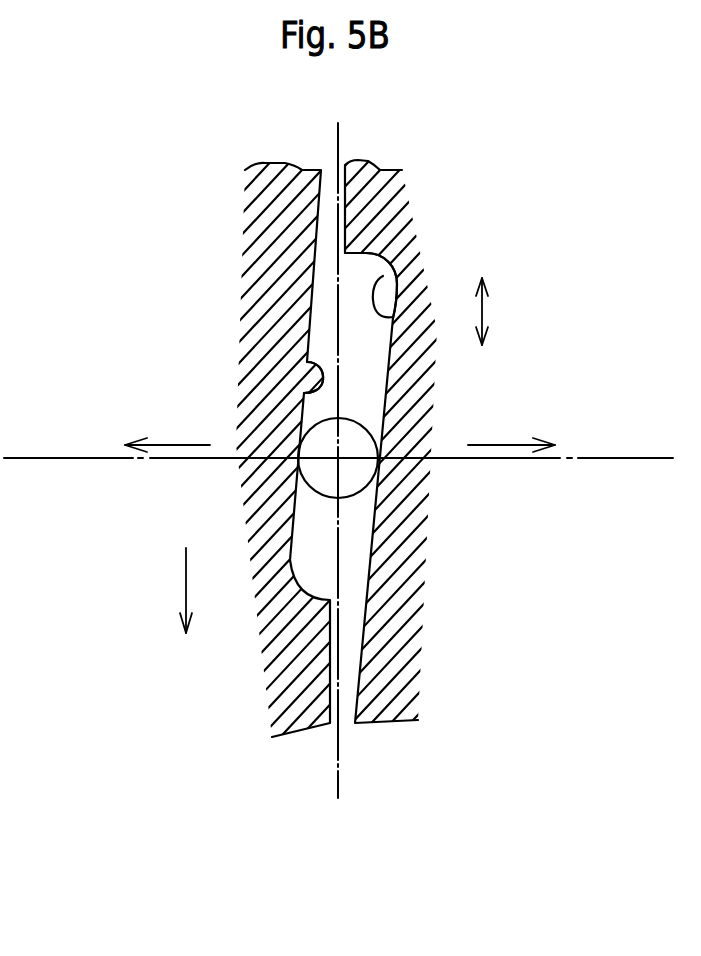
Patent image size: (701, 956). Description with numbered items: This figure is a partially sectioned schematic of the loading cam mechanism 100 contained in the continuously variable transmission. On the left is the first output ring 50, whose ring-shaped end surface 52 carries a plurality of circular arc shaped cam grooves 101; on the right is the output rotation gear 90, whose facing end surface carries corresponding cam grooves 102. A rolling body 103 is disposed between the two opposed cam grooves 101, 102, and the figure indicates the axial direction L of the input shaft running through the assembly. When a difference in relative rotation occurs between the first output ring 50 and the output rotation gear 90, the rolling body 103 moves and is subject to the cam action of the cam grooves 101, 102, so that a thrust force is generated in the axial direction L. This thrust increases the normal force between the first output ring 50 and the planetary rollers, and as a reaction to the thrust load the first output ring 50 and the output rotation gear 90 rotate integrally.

The loading cam mechanism 100 is at (232, 265).
The cam groove 101 is at (307, 362).
The cam groove 102 is at (395, 277).
The rolling body 103 is at (352, 419).
The first output ring 50 is at (292, 728).
The end surface 52 is at (336, 722).
The output rotation gear 90 is at (390, 722).
The axial direction L is at (613, 458).